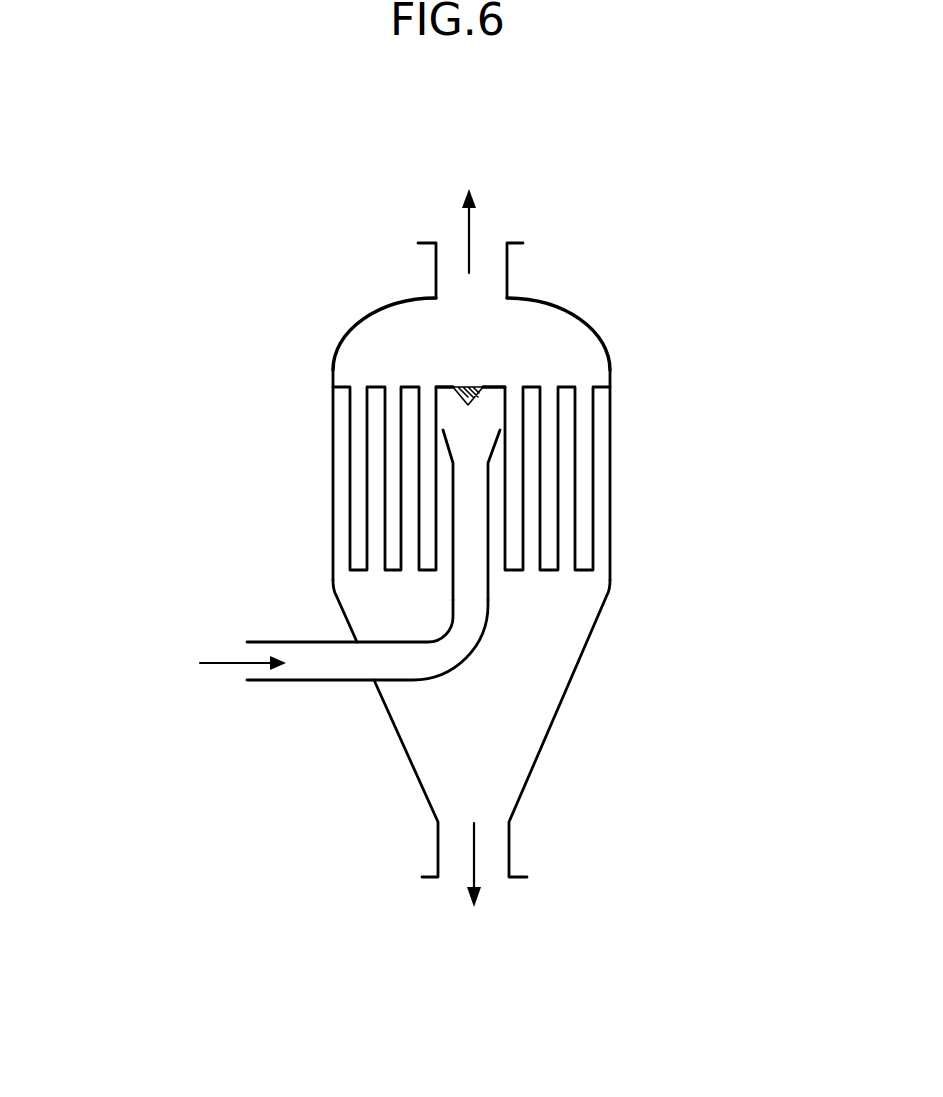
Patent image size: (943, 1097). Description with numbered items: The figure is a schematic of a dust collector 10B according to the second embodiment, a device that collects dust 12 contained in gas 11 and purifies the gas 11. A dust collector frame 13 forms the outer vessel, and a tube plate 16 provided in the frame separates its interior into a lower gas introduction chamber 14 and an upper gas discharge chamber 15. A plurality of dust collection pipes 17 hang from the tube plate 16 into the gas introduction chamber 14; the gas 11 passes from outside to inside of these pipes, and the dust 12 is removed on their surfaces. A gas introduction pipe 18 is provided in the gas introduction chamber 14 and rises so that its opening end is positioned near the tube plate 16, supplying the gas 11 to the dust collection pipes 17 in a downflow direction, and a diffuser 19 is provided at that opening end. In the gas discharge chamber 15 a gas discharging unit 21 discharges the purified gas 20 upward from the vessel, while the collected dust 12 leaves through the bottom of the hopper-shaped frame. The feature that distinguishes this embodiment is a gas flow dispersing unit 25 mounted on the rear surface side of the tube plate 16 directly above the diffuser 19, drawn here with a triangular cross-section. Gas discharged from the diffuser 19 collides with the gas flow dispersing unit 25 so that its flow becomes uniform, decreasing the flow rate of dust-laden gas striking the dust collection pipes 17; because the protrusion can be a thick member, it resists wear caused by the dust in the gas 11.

The dust collector 10B is at (403, 190).
The gas 11 is at (220, 663).
The dust 12 is at (477, 880).
The dust collector frame 13 is at (612, 475).
The gas introduction chamber 14 is at (583, 633).
The gas discharge chamber 15 is at (578, 327).
The tube plate 16 is at (493, 387).
The dust collection pipes 17 is at (347, 458).
The gas introduction pipe 18 is at (480, 650).
The diffuser 19 is at (490, 450).
The purified gas 20 is at (472, 220).
The gas discharging unit 21 is at (505, 273).
The gas flow dispersing unit 25 is at (467, 387).